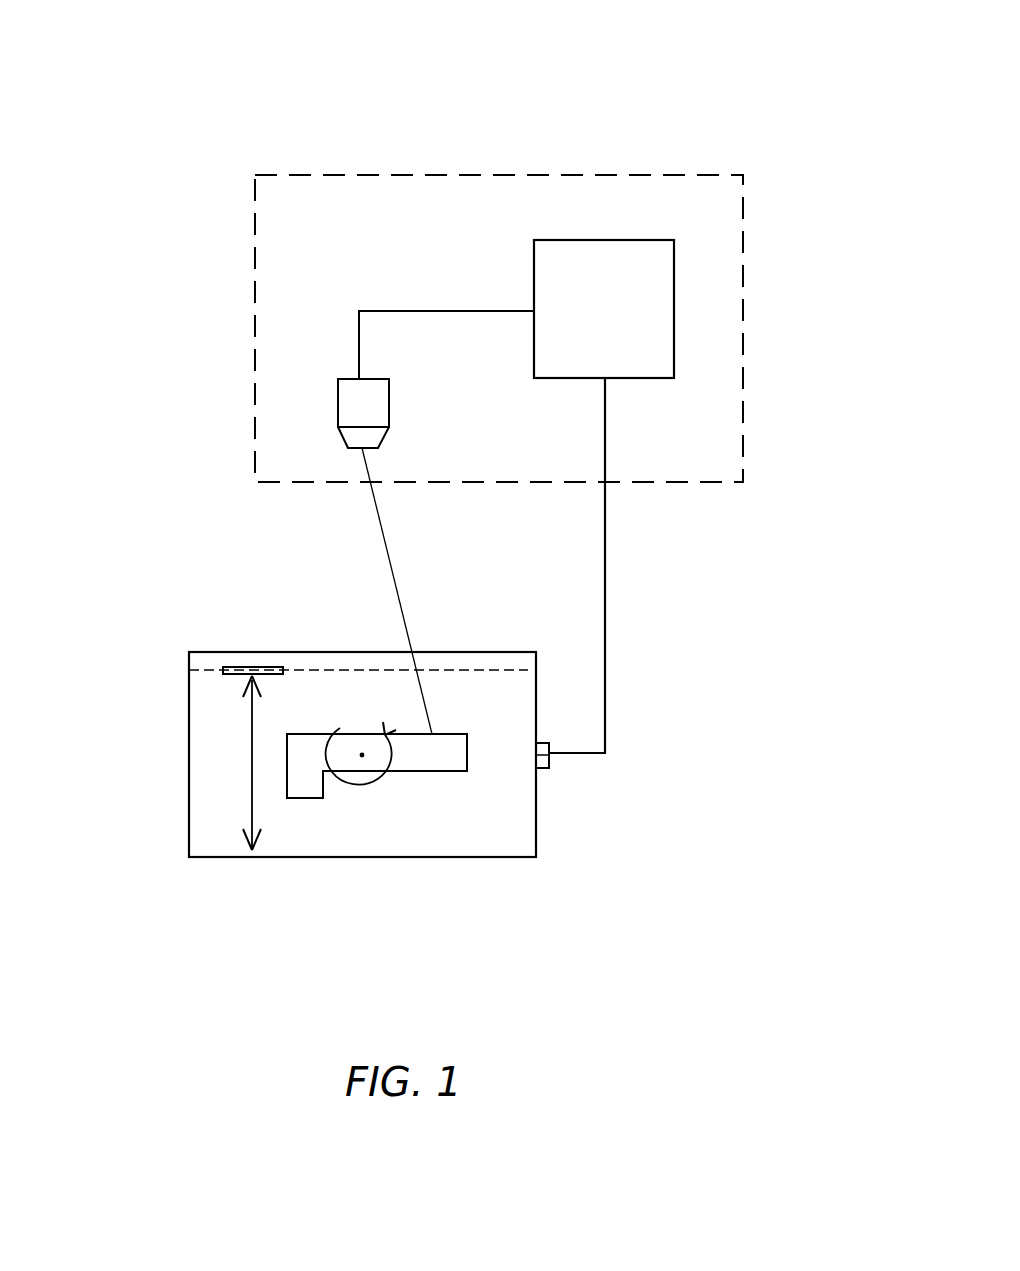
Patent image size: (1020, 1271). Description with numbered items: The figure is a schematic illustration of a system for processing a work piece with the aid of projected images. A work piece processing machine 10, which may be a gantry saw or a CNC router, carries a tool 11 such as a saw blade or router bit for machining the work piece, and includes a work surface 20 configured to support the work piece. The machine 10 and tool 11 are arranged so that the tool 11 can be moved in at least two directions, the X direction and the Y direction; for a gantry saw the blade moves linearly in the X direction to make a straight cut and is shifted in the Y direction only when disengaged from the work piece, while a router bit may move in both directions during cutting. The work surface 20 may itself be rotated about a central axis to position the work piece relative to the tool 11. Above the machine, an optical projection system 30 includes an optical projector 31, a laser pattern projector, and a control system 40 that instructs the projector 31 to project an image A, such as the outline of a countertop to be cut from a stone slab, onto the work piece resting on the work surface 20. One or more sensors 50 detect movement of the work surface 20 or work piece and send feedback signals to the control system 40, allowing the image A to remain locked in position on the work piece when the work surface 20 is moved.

The work piece processing machine 10 is at (189, 772).
The tool 11 is at (238, 667).
The work surface 20 is at (488, 828).
The optical projection system 30 is at (427, 175).
The optical projector 31 is at (390, 398).
The control system 40 is at (674, 262).
The sensor 50 is at (549, 758).
The X direction X is at (407, 670).
The Y direction Y is at (252, 803).
The image A is at (467, 748).